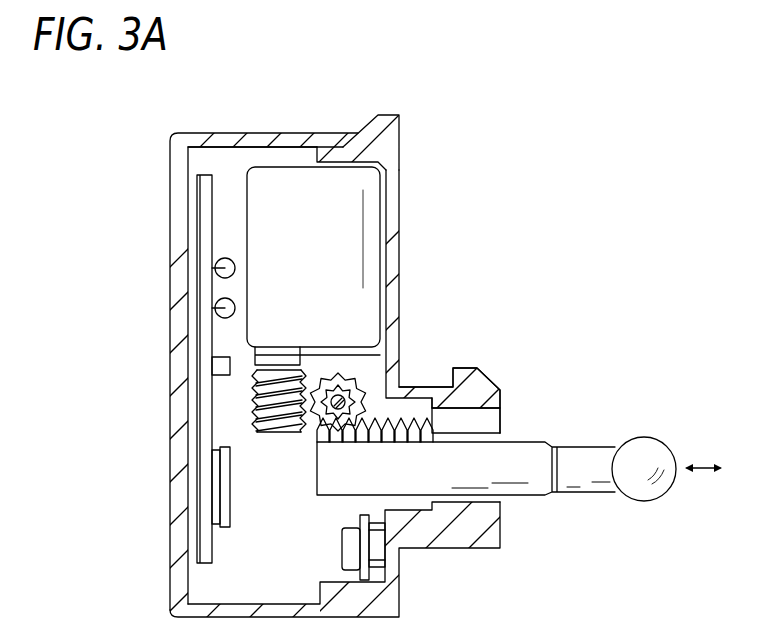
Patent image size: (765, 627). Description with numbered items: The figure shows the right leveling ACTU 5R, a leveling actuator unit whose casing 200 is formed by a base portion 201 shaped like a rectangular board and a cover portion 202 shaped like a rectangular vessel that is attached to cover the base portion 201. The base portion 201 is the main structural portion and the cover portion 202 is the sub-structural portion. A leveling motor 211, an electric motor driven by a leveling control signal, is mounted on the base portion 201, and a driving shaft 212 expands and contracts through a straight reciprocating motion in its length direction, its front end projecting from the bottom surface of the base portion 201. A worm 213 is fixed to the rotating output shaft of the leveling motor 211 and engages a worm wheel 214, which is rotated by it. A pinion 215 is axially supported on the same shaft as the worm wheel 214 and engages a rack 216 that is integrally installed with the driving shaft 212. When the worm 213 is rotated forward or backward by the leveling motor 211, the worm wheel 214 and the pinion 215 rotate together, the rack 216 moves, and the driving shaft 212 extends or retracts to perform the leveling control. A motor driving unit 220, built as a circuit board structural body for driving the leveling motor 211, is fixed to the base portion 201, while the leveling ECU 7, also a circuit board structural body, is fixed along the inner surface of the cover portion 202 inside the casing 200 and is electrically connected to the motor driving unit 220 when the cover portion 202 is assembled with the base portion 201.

The right leveling ACTU 5R is at (410, 132).
The leveling ECU 7 is at (203, 243).
The casing 200 is at (382, 135).
The base portion 201 is at (393, 214).
The cover portion 202 is at (197, 138).
The leveling motor 211 is at (342, 277).
The driving shaft 212 is at (580, 458).
The worm 213 is at (255, 373).
The worm wheel 214 is at (372, 400).
The pinion 215 is at (366, 388).
The rack 216 is at (433, 433).
The motor driving unit 220 is at (353, 548).